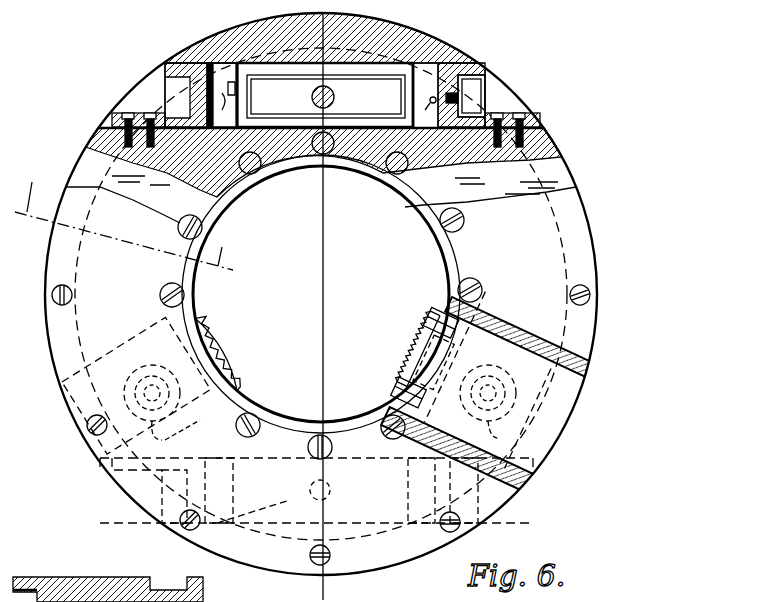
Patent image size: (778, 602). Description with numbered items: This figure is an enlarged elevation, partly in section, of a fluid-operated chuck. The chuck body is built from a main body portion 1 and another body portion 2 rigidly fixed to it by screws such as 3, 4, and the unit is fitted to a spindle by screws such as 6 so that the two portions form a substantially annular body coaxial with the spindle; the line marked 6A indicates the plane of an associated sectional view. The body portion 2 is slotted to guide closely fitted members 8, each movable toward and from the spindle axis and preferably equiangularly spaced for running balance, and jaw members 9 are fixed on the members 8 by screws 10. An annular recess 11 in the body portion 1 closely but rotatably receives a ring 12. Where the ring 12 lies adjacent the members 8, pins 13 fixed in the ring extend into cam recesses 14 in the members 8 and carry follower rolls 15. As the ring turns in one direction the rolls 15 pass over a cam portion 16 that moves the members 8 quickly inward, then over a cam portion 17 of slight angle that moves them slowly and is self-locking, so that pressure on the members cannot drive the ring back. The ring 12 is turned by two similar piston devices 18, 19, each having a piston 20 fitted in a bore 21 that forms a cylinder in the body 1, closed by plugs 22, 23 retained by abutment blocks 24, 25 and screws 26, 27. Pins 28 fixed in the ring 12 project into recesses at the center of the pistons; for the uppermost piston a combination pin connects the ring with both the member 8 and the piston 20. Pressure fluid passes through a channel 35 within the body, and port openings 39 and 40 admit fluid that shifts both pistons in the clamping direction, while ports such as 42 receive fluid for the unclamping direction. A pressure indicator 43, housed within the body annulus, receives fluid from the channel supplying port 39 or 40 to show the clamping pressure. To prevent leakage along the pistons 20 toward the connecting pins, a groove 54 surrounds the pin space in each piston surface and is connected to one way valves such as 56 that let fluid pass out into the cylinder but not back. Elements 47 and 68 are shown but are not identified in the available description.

The main body portion 1 is at (87, 168).
The body portion 2 is at (57, 268).
The screws 3 is at (591, 296).
The screws 4 is at (252, 174).
The screws 6 is at (328, 153).
The section line 6A is at (316, 18).
The clamp members 8 is at (103, 358).
The jaw members 9 is at (220, 363).
The screws 10 is at (425, 323).
The annular recess 11 is at (112, 163).
The ring 12 is at (137, 202).
The pins 13 is at (332, 95).
The cam recesses 14 is at (142, 420).
The follower rolls 15 is at (140, 357).
The cam portion 16 is at (128, 377).
The cam portion 17 is at (171, 437).
The piston device 18 is at (443, 53).
The piston device 19 is at (266, 530).
The piston 20 is at (72, 601).
The bore 21 is at (218, 63).
The plug 22 is at (467, 62).
The plug 23 is at (172, 68).
The abutment block 24 is at (117, 113).
The abutment block 25 is at (538, 125).
The screws 26 is at (150, 112).
The screws 27 is at (517, 113).
The pins 28 is at (332, 490).
The channel 35 is at (224, 95).
The port opening 39 is at (428, 111).
The port opening 40 is at (207, 495).
The port 42 is at (427, 492).
The pressure indicator 43 is at (475, 90).
The spring 47 is at (225, 95).
The groove 54 is at (284, 76).
The one way valve 56 is at (425, 95).
The axis line 68 is at (129, 216).